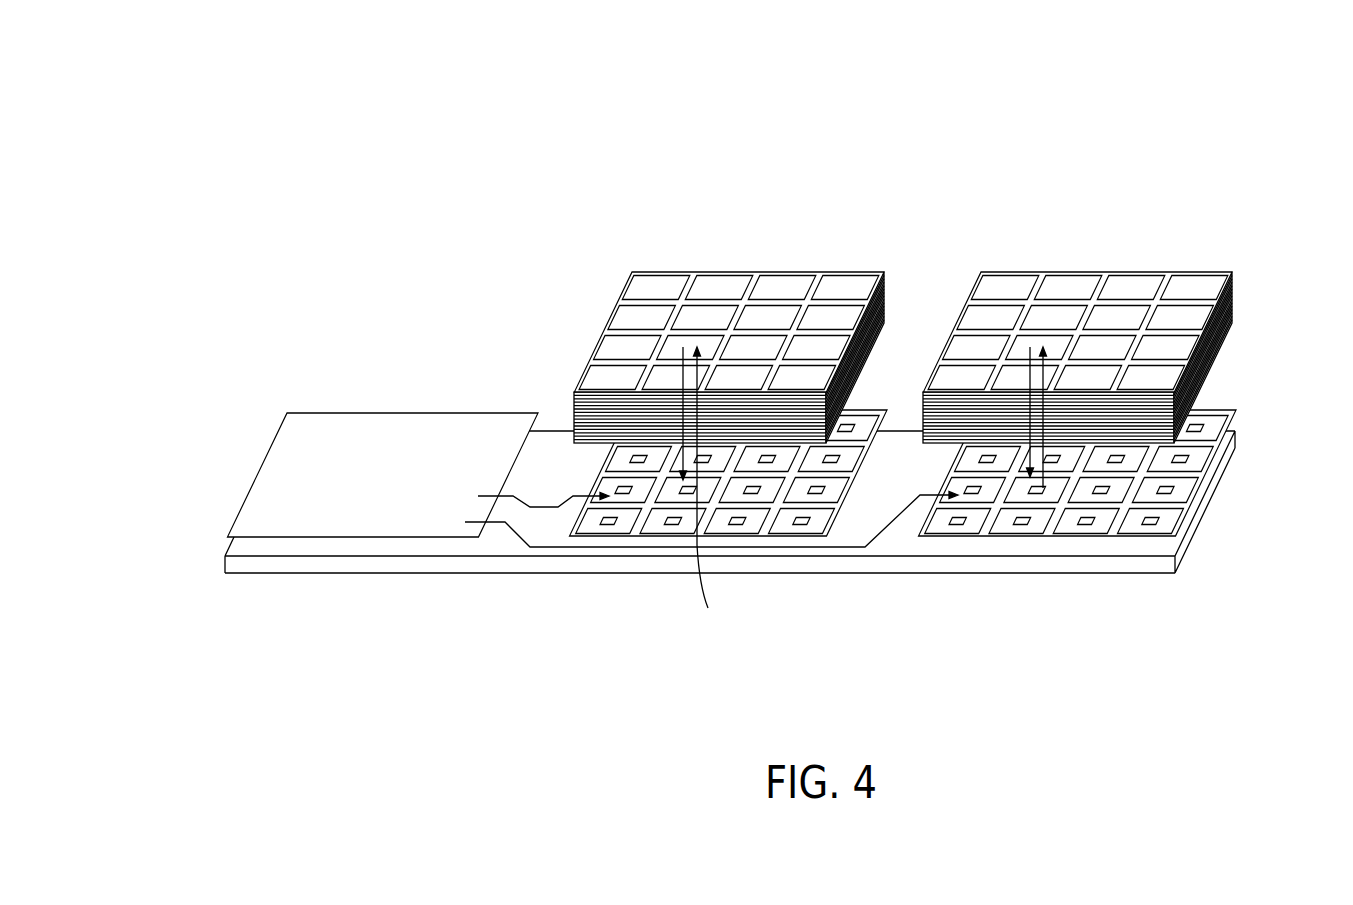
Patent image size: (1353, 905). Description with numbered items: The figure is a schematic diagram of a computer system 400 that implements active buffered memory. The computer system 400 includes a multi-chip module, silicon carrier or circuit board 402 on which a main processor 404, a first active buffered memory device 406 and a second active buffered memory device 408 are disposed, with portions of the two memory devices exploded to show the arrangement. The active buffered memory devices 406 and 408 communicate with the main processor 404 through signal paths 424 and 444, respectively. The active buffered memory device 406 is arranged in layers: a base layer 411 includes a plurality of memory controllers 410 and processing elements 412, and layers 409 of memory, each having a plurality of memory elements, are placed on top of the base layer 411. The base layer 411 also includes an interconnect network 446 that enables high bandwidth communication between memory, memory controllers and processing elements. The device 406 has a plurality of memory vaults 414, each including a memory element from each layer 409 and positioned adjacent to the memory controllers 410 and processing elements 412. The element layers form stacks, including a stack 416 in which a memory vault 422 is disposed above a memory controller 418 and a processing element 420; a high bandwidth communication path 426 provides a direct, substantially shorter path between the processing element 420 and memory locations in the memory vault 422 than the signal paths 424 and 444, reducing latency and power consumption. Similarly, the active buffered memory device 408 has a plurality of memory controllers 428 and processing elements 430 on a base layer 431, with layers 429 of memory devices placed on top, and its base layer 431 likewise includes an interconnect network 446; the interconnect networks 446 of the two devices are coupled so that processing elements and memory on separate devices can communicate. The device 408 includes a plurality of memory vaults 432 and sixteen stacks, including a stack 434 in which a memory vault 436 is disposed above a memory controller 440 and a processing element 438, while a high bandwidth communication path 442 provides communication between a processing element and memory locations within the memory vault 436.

The computer system 400 is at (830, 75).
The circuit board 402 is at (465, 560).
The main processor 404 is at (372, 479).
The active buffered memory device 406 is at (700, 317).
The active buffered memory device 408 is at (1108, 317).
The layers 409 is at (561, 403).
The memory controllers 410 is at (738, 522).
The base layer 411 is at (718, 546).
The processing elements 412 is at (832, 492).
The memory vaults 414 is at (850, 315).
The stack 416 is at (651, 352).
The memory controller 418 is at (690, 492).
The processing element 420 is at (707, 491).
The memory vault 422 is at (705, 346).
The signal path 424 is at (532, 507).
The high bandwidth communication path 426 is at (664, 378).
The memory controllers 428 is at (1163, 487).
The layers 429 is at (1249, 276).
The processing elements 430 is at (1124, 523).
The base layer 431 is at (990, 547).
The memory vaults 432 is at (1178, 285).
The stack 434 is at (1044, 318).
The memory vault 436 is at (1025, 346).
The processing element 438 is at (1022, 492).
The memory controller 440 is at (1038, 492).
The high bandwidth communication path 442 is at (1015, 378).
The signal path 444 is at (550, 550).
The interconnect network 446 is at (843, 503).